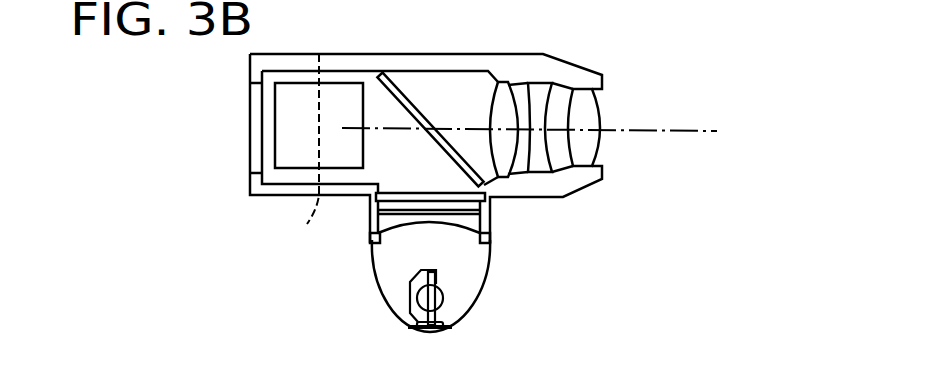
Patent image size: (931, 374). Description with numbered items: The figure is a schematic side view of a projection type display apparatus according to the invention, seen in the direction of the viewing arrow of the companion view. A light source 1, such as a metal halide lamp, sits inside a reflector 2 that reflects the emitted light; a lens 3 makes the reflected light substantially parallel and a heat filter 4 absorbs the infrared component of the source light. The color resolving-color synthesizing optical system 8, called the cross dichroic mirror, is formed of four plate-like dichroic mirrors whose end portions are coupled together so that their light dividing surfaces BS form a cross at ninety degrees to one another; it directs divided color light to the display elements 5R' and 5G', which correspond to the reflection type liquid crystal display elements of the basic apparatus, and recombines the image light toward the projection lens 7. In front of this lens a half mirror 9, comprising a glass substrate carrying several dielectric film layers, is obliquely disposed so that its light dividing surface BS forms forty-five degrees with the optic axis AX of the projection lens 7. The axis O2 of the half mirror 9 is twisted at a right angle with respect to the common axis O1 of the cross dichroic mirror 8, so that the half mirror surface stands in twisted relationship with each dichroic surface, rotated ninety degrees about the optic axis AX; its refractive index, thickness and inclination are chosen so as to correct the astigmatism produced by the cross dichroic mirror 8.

The light source 1 is at (443, 294).
The reflector 2 is at (373, 278).
The lens 3 is at (488, 225).
The heat filter 4 is at (478, 203).
The projection lens 7 is at (597, 109).
The cross dichroic mirror 8 is at (292, 158).
The half mirror 9 is at (397, 86).
The right finder housing 5R' is at (426, 55).
The left finder housing 5G' is at (277, 148).
The common axis of the cross dichroic mirror O1 is at (296, 150).
The axis of the half mirror O2 is at (431, 129).
The light dividing surface BS is at (431, 130).
The optic axis AX is at (703, 131).